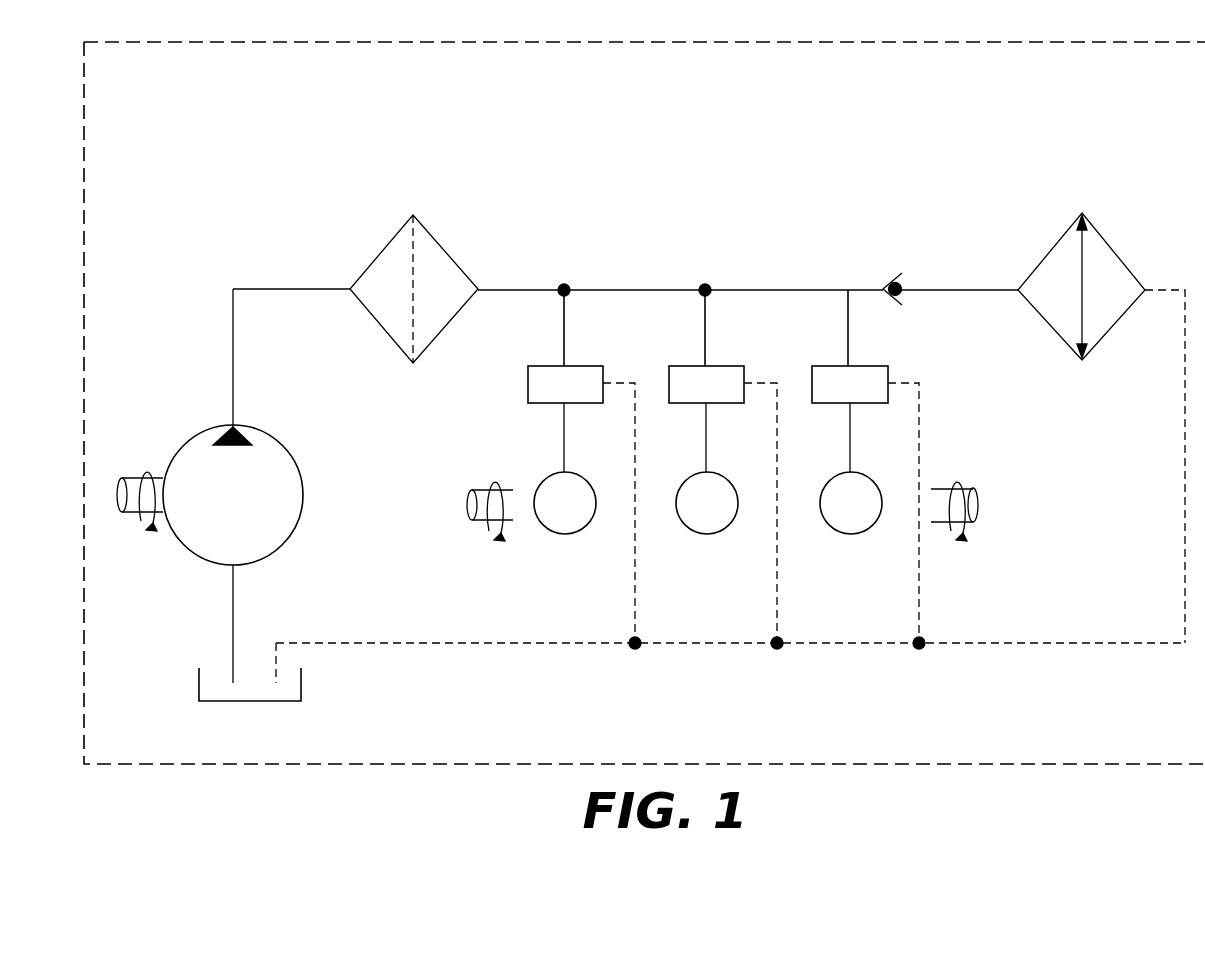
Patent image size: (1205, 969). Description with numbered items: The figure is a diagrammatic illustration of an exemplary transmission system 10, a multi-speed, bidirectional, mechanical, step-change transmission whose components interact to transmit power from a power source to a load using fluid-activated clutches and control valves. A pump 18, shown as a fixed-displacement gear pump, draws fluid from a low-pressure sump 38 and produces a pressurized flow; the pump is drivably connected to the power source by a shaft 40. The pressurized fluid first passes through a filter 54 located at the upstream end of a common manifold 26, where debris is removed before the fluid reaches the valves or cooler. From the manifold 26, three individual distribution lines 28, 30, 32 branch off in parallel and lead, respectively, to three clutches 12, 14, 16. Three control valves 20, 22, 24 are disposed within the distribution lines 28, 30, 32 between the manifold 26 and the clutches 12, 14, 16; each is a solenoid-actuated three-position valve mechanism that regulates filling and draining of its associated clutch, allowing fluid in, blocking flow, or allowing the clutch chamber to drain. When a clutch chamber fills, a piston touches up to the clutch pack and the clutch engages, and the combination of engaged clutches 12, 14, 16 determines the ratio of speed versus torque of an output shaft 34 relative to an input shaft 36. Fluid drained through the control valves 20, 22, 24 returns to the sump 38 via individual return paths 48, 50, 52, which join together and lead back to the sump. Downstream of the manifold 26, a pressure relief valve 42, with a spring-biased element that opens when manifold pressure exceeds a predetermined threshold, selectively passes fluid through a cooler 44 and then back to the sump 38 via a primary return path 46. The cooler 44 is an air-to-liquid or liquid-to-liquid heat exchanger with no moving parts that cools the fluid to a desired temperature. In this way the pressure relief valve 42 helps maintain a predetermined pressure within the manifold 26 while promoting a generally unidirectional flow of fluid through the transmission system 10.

The transmission system 10 is at (1017, 764).
The clutch 12 is at (568, 534).
The clutch 14 is at (710, 534).
The clutch 16 is at (854, 534).
The pump 18 is at (233, 486).
The control valve 20 is at (565, 419).
The control valve 22 is at (706, 419).
The control valve 24 is at (850, 419).
The common manifold 26 is at (617, 290).
The distribution line 28 is at (564, 320).
The distribution line 30 is at (705, 320).
The distribution line 32 is at (848, 320).
The output shaft 34 is at (967, 514).
The input shaft 36 is at (480, 514).
The sump 38 is at (301, 683).
The shaft 40 is at (130, 503).
The pressure relief valve 42 is at (895, 279).
The cooler 44 is at (1055, 324).
The primary return path 46 is at (1185, 615).
The return path 48 is at (637, 612).
The return path 50 is at (779, 612).
The return path 52 is at (921, 612).
The filter 54 is at (443, 247).